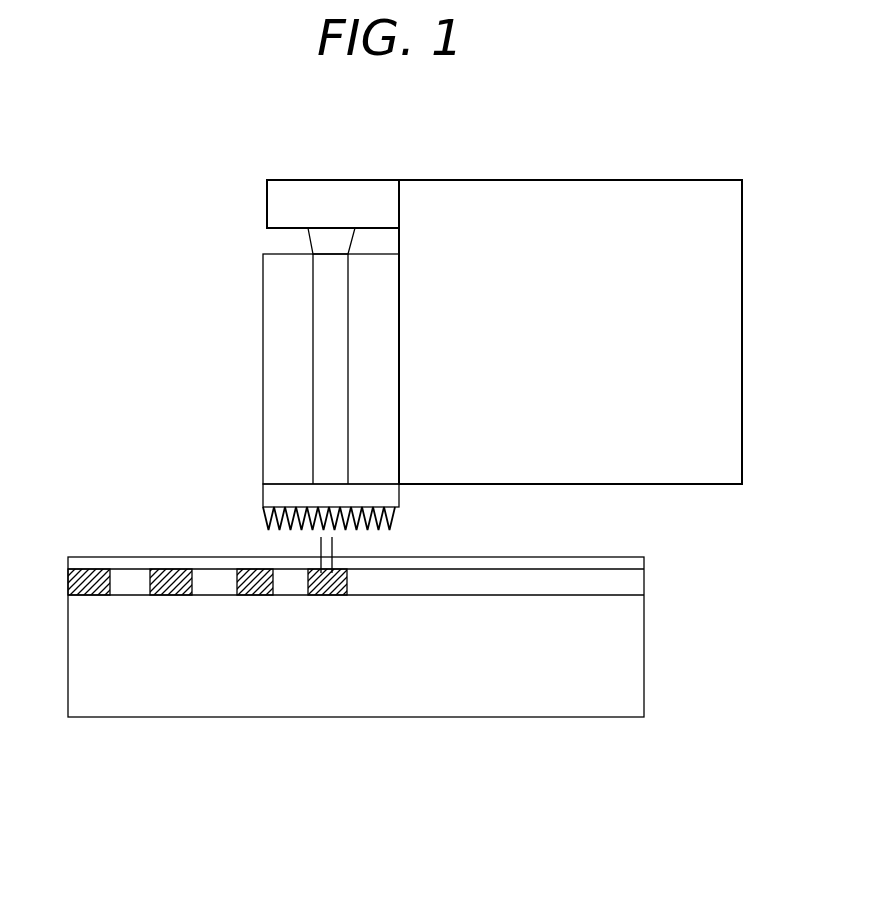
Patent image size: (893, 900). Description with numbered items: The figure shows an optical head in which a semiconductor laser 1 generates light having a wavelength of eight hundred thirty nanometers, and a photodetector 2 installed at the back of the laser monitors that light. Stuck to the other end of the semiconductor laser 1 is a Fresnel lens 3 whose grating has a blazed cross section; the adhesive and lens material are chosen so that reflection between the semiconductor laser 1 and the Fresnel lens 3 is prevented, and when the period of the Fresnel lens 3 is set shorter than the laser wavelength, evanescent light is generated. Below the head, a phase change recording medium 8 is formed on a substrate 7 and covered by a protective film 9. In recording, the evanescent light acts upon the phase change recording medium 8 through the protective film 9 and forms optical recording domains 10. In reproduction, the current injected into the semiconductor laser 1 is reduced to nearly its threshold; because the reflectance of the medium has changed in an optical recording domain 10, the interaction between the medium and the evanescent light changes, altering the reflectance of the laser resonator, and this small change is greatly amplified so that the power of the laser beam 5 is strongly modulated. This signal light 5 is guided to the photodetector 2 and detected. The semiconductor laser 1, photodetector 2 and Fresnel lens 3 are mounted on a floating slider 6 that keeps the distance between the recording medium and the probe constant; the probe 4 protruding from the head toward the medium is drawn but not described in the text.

The semiconductor laser 1 is at (281, 322).
The photodetector 2 is at (277, 200).
The Fresnel lens 3 is at (262, 513).
The probe needle 4 is at (318, 548).
The laser beam 5 is at (307, 241).
The floating slider 6 is at (493, 192).
The substrate 7 is at (620, 636).
The phase change recording medium 8 is at (633, 577).
The protective film 9 is at (632, 565).
The optical recording domains 10 is at (253, 585).